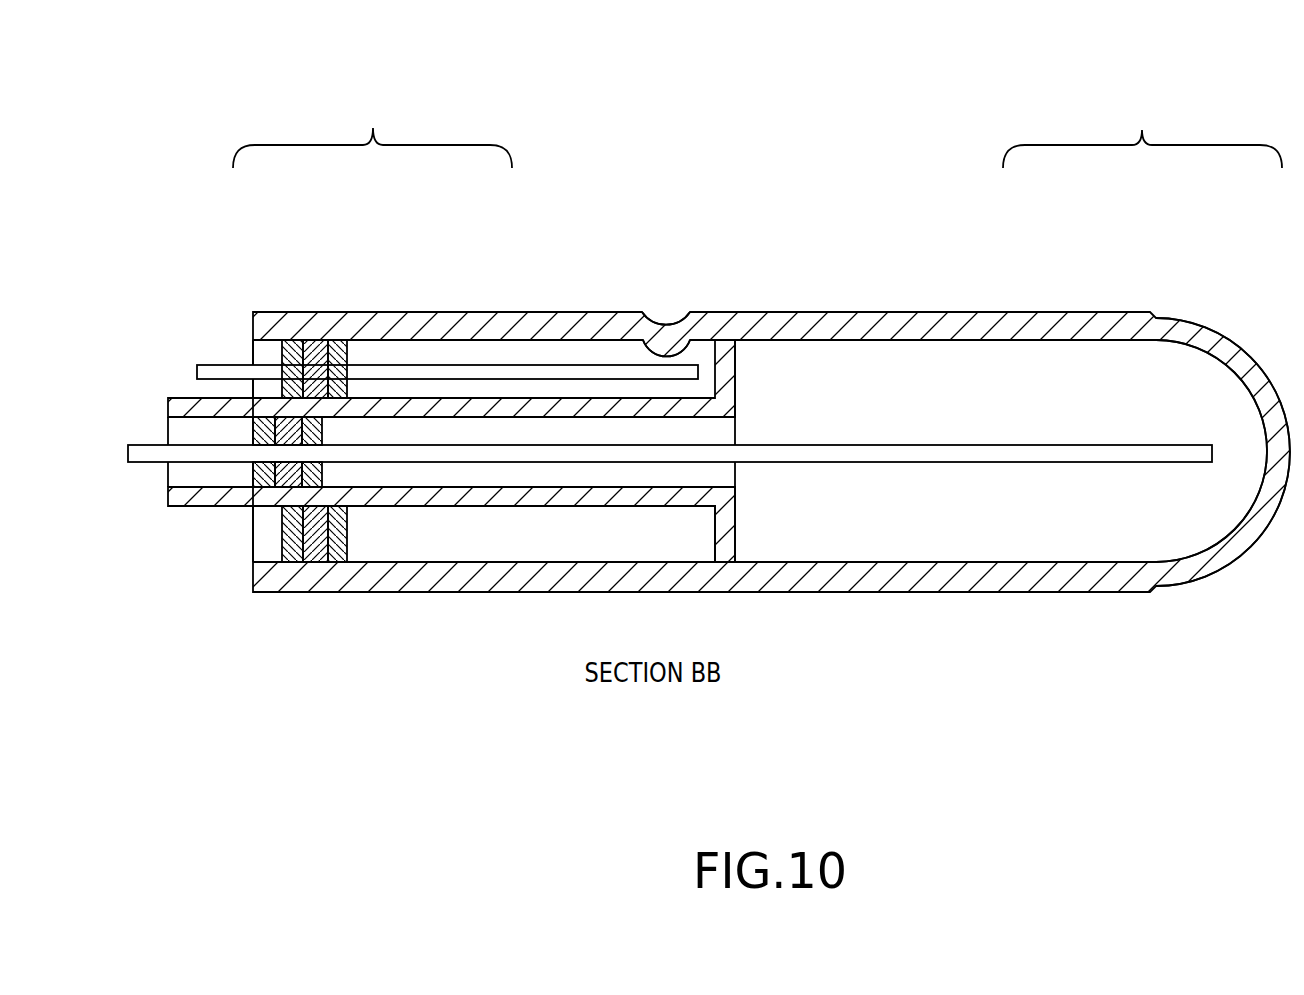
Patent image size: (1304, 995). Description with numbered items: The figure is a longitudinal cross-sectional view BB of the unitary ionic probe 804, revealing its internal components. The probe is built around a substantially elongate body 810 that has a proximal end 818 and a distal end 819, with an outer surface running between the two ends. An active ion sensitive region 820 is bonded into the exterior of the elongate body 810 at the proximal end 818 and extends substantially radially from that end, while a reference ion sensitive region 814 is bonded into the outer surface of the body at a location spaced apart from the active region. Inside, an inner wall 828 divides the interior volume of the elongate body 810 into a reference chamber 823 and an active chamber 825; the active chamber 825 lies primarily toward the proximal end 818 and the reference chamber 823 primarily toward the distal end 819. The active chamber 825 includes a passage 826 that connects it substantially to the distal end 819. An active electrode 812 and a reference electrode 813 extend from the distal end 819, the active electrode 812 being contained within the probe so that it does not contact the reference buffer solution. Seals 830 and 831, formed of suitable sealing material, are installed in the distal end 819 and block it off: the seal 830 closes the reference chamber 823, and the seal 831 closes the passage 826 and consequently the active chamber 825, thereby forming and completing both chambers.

The unitary ionic probe 804 is at (378, 771).
The elongate body 810 is at (533, 592).
The active electrode 812 is at (970, 445).
The reference electrode 813 is at (593, 367).
The reference ion sensitive region 814 is at (688, 288).
The proximal end 818 is at (1142, 130).
The distal end 819 is at (373, 128).
The active ion sensitive region 820 is at (1287, 285).
The reference chamber 823 is at (470, 360).
The active chamber 825 is at (1075, 373).
The passage 826 is at (642, 472).
The inner wall 828 is at (443, 505).
The seal 830 is at (282, 517).
The seal 831 is at (253, 442).